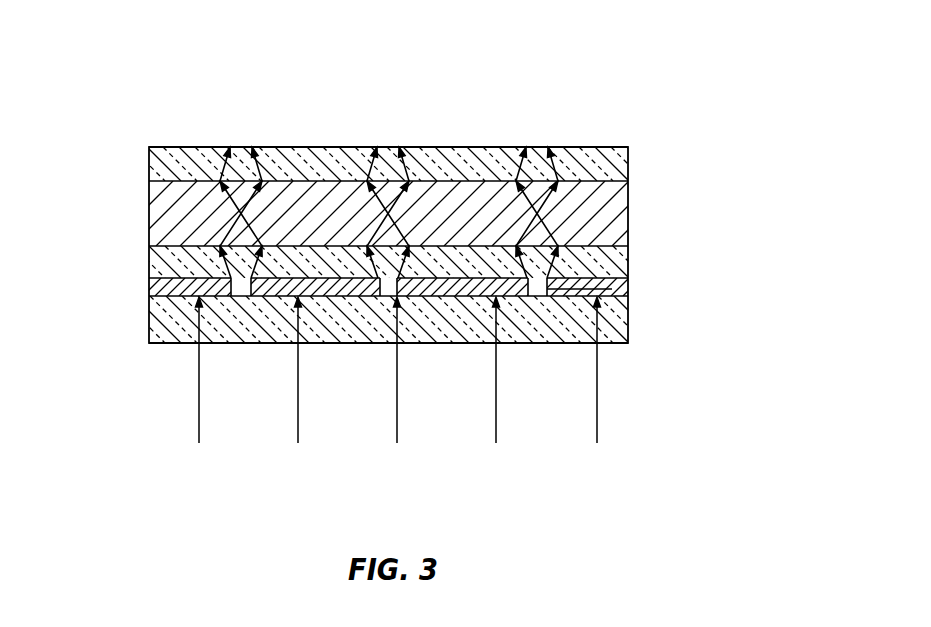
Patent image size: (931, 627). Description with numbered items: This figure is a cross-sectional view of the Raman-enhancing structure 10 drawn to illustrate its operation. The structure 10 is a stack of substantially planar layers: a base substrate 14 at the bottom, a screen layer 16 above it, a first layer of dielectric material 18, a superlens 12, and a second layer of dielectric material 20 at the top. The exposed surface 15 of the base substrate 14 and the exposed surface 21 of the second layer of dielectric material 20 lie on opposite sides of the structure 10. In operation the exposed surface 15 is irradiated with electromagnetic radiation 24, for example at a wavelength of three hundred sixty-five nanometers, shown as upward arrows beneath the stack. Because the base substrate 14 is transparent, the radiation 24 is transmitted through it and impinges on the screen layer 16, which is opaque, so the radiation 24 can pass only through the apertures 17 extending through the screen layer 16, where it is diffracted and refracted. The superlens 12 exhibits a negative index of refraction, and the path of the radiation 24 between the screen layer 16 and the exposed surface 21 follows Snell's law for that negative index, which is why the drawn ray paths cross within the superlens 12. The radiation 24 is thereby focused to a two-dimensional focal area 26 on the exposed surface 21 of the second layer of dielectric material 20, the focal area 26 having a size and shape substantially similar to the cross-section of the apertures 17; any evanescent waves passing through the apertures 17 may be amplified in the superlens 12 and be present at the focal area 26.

The Raman-enhancing structure 10 is at (648, 102).
The superlens 12 is at (170, 218).
The base substrate 14 is at (160, 318).
The exposed surface 15 is at (178, 345).
The screen layer 16 is at (163, 287).
The aperture 17 is at (538, 289).
The first layer of dielectric material 18 is at (166, 262).
The second layer of dielectric material 20 is at (170, 160).
The exposed surface 21 is at (197, 147).
The electromagnetic radiation 24 is at (620, 450).
The two-dimensional focal area 26 is at (240, 146).